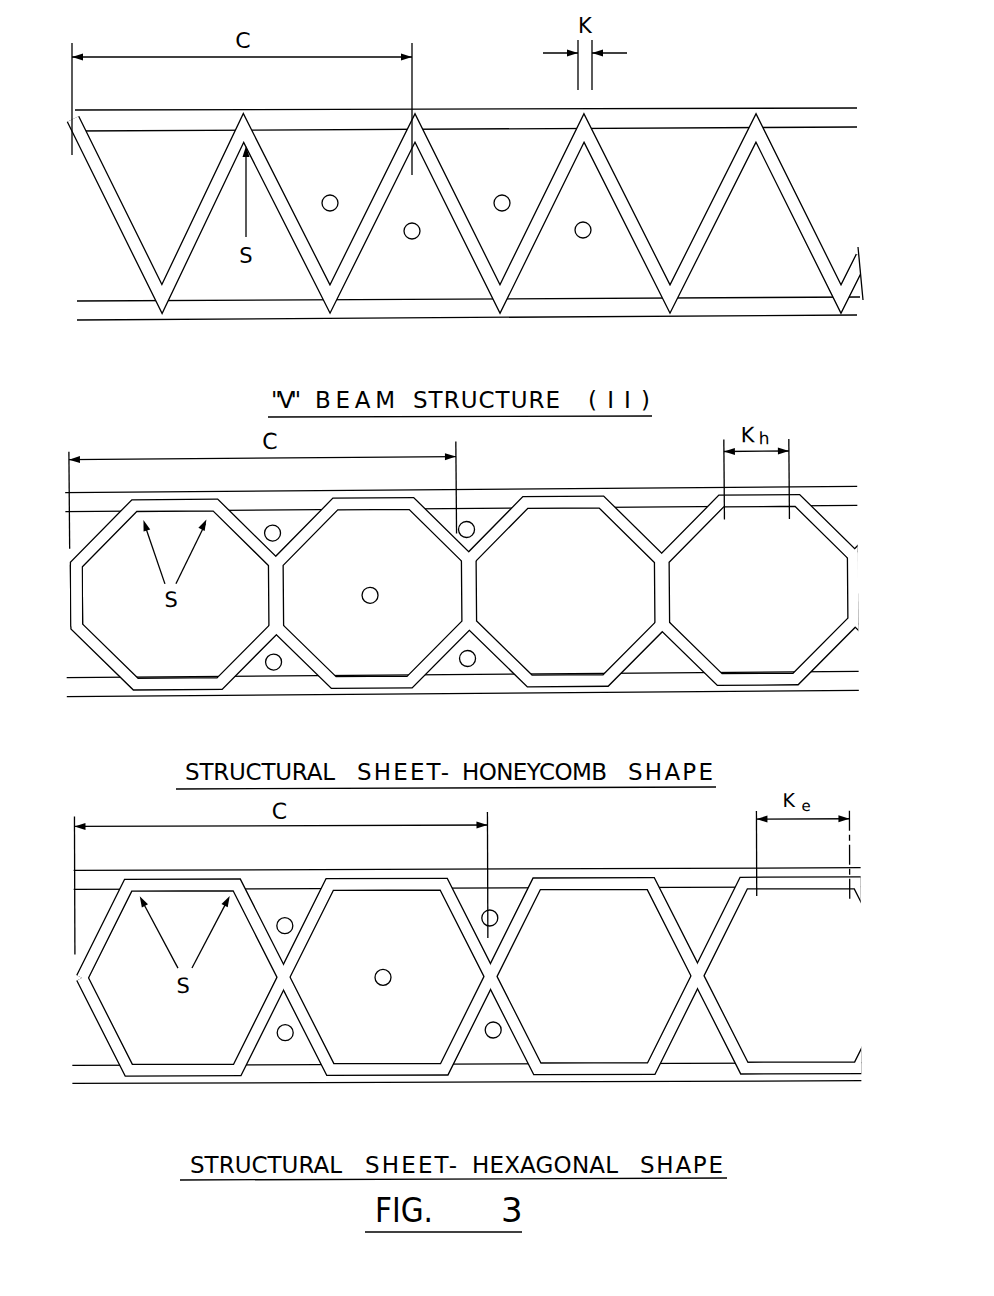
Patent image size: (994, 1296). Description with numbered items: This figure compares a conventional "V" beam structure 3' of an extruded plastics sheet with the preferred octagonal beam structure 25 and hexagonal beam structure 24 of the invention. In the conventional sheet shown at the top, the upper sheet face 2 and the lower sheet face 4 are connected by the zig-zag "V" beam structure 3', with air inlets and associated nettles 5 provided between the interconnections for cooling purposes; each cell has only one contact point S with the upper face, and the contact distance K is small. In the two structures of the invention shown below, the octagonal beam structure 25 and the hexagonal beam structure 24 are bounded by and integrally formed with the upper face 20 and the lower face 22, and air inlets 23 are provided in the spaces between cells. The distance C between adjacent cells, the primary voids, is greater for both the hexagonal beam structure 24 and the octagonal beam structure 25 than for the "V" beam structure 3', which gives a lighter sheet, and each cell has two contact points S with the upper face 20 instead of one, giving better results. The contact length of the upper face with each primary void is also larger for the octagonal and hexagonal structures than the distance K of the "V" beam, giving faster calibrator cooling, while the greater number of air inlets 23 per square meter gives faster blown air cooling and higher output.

The upper sheet face 2 is at (682, 115).
The "V" beam structure 3' is at (468, 157).
The lower sheet face 4 is at (747, 306).
The air inlets and associated nettles 5 is at (585, 238).
The upper face 20 is at (657, 487).
The lower face 22 is at (667, 677).
The air inlets 23 is at (372, 601).
The hexagonal beam structure 24 is at (722, 935).
The octagonal beam structure 25 is at (685, 540).